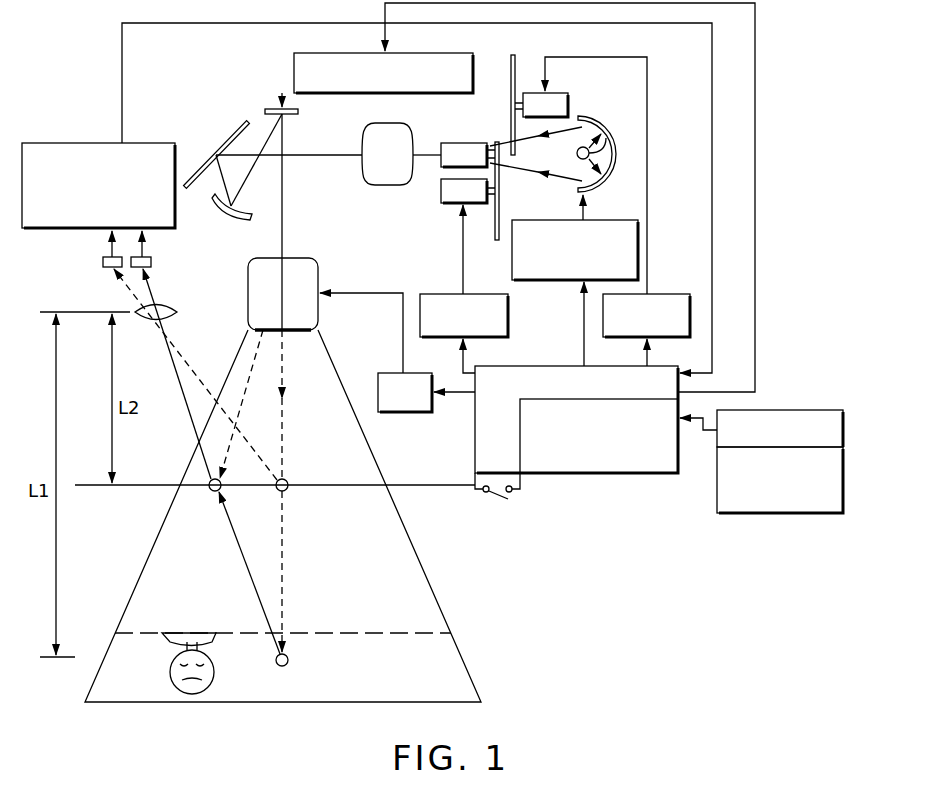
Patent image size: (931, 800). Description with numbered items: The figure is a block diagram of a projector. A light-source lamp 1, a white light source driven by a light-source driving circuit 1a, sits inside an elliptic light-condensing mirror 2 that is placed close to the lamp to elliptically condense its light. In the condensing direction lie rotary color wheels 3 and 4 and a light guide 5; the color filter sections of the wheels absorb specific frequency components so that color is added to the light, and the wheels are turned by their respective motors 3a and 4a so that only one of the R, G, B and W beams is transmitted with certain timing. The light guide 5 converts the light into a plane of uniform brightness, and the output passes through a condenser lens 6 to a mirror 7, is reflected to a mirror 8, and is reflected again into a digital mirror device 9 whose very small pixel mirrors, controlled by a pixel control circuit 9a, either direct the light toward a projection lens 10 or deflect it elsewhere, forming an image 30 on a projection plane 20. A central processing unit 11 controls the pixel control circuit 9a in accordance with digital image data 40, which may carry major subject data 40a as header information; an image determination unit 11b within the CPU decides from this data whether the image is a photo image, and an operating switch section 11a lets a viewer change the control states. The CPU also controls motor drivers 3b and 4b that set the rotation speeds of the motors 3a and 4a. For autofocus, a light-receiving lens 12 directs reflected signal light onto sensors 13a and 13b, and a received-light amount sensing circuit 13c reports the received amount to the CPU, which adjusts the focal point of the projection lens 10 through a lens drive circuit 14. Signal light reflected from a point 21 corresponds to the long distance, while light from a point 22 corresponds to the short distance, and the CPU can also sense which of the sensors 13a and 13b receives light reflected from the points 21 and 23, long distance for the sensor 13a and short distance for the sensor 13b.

The light-source lamp 1 is at (612, 138).
The light-source driving circuit 1a is at (512, 270).
The elliptic light-condensing mirror 2 is at (602, 118).
The rotary color wheel 3 is at (511, 72).
The motor 3a is at (555, 93).
The motor driver 3b is at (660, 294).
The rotary color wheel 4 is at (500, 214).
The motor 4a is at (454, 206).
The motor driver 4b is at (508, 330).
The light guide 5 is at (460, 143).
The condenser lens 6 is at (388, 186).
The mirror 7 is at (226, 140).
The mirror 8 is at (236, 222).
The digital mirror device (DMD) 9 is at (300, 112).
The pixel control circuit 9a is at (294, 62).
The projection lens 10 is at (306, 257).
The central processing unit (CPU) 11 is at (475, 428).
The operating switch section 11a is at (492, 500).
The image determination unit 11b is at (650, 476).
The light-receiving lens 12 is at (180, 312).
The sensor 13a is at (151, 263).
The sensor 13b is at (103, 263).
The received-light amount sensing circuit 13c is at (83, 142).
The lens drive (LD) circuit 14 is at (386, 414).
The projection plane 20 is at (482, 682).
The point 21 is at (290, 660).
The point 22 is at (214, 494).
The point 23 is at (286, 492).
The image 30 is at (170, 675).
The image data 40 is at (800, 410).
The major subject data 40a is at (812, 514).